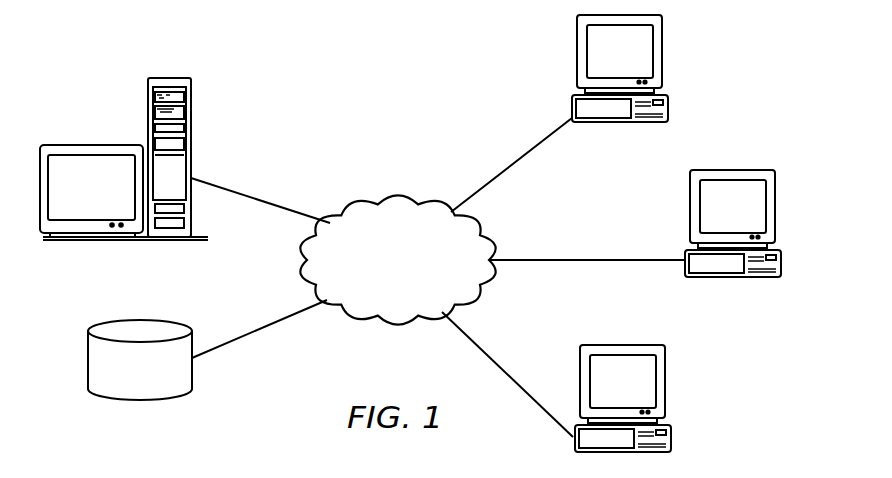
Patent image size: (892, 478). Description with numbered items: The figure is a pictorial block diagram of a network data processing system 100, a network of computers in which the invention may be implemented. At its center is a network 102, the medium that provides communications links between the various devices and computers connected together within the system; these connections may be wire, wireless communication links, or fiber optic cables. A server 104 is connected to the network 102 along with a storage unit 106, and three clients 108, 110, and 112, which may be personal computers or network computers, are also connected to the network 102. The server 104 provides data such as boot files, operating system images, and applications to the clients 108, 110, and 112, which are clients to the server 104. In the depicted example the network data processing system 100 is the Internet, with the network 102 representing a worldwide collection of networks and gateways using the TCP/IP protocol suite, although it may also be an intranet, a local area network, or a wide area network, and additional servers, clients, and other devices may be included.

The network data processing system 100 is at (272, 57).
The network 102 is at (382, 290).
The server 104 is at (148, 105).
The storage unit 106 is at (88, 360).
The client 108 is at (662, 60).
The client 110 is at (774, 208).
The client 112 is at (666, 385).